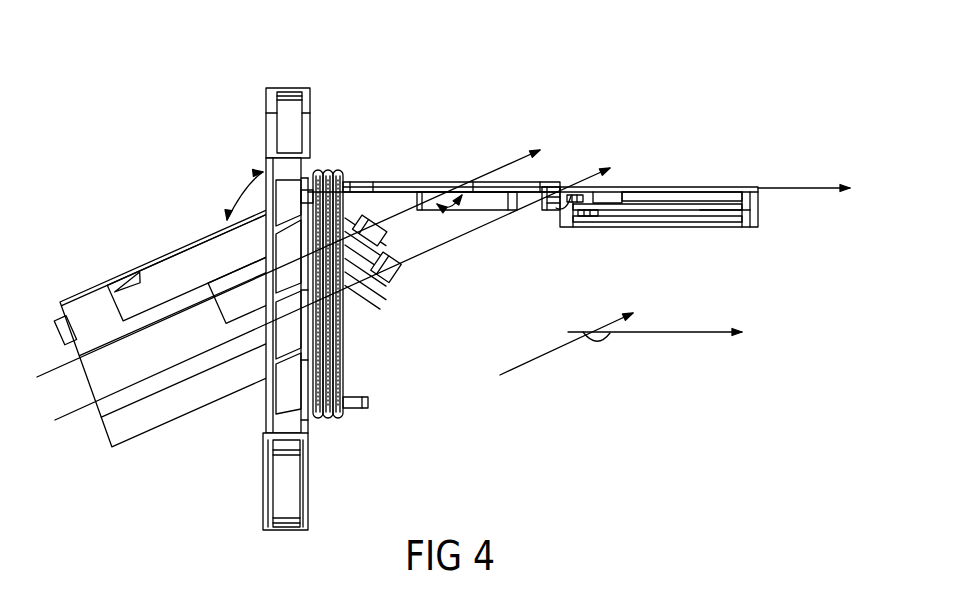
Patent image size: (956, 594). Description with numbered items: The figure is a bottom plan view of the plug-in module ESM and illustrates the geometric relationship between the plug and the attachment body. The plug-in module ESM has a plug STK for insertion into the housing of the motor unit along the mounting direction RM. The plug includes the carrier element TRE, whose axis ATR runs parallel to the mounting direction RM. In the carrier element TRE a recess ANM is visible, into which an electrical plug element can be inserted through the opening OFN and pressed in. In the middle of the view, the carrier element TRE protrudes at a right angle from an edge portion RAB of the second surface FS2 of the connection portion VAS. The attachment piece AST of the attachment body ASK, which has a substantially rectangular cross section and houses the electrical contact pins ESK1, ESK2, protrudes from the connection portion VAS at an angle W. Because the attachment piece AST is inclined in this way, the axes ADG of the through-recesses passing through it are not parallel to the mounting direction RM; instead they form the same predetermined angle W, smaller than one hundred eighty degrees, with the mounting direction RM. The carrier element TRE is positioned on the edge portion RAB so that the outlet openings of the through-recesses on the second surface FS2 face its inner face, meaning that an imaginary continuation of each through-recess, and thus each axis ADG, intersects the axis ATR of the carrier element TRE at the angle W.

The attachment piece AST is at (155, 252).
The connection portion VAS is at (266, 103).
The attachment body ASK is at (203, 167).
The second surface FS2 is at (347, 365).
The first electrical contact pin ESK1 is at (385, 212).
The second electrical contact pin ESK2 is at (408, 278).
The edge portion RAB is at (348, 181).
The carrier element TRE is at (733, 187).
The opening OFN is at (720, 218).
The recess ANM is at (732, 216).
The axis of the carrier element ATR is at (804, 208).
The mounting direction RM is at (655, 350).
The axes of the through-recesses ADG is at (348, 274).
The angle W is at (614, 393).
The plug STK is at (497, 118).
The plug-in module ESM is at (520, 427).